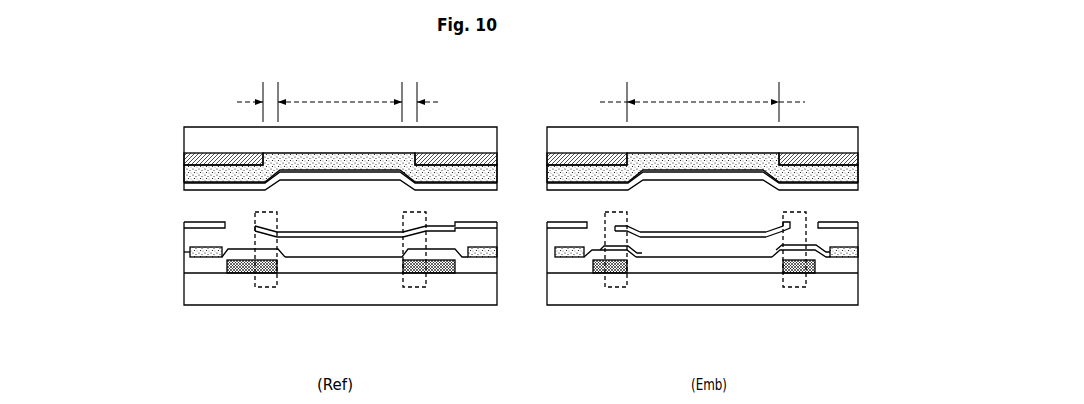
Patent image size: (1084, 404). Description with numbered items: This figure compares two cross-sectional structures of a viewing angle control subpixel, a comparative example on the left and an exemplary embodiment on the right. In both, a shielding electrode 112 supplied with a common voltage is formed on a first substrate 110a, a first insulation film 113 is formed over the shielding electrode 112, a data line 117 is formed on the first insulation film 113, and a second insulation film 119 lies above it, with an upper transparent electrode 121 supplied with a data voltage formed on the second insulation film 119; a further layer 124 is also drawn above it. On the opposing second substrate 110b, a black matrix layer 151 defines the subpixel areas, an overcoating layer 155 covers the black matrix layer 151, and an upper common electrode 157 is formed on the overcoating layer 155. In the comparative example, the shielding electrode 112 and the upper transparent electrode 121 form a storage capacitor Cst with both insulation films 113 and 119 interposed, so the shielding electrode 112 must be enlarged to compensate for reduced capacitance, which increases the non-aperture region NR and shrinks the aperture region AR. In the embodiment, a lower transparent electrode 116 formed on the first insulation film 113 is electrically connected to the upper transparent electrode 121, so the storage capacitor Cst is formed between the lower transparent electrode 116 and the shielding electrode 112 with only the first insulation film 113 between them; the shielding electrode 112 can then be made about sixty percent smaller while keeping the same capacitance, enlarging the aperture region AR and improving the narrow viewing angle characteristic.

The first substrate 110a is at (184, 290).
The second substrate 110b is at (192, 134).
The shielding electrode 112 is at (245, 287).
The first insulation film 113 is at (283, 275).
The lower transparent electrode 116 is at (773, 253).
The data line 117 is at (184, 252).
The second insulation film 119 is at (325, 260).
The upper transparent electrode 121 is at (375, 233).
The bank layer 124 is at (184, 222).
The black matrix layer 151 is at (184, 159).
The overcoating layer 155 is at (184, 175).
The upper common electrode 157 is at (184, 191).
The storage capacitor Cst is at (426, 287).
The non-aperture region NR is at (338, 92).
The aperture region AR is at (568, 100).